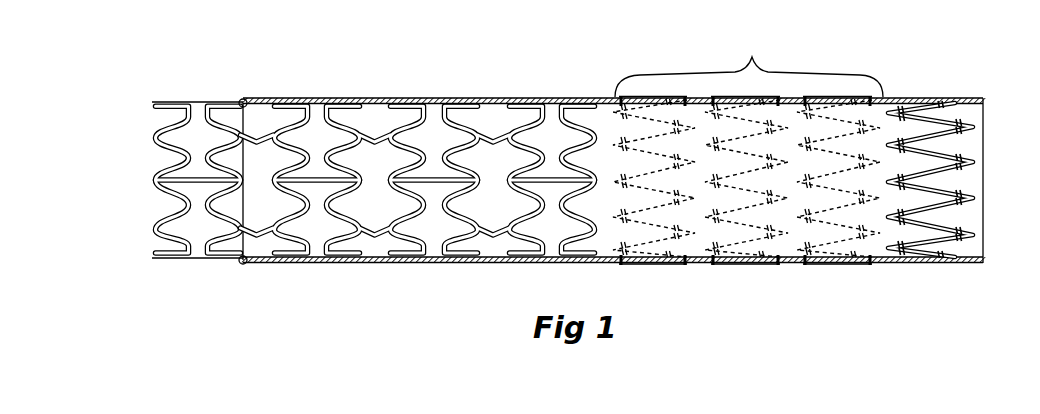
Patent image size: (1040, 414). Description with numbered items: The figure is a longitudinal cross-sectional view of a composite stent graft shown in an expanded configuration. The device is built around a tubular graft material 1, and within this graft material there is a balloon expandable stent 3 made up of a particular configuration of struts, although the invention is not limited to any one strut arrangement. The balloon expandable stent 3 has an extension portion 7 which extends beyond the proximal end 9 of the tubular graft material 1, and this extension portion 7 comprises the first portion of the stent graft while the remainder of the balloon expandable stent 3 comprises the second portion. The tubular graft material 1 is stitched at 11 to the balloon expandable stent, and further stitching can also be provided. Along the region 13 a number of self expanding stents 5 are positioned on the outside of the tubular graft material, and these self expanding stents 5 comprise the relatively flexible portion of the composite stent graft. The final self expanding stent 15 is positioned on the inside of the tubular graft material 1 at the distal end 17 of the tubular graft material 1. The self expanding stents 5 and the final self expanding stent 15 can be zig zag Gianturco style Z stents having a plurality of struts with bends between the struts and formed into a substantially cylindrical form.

The tubular graft material 1 is at (586, 97).
The balloon expandable stent 3 is at (347, 237).
The self expanding stents 5 is at (747, 228).
The extension portion 7 is at (160, 167).
The proximal end 9 is at (248, 264).
The stitching 11 is at (245, 99).
The region 13 is at (752, 60).
The final self expanding stent 15 is at (907, 243).
The distal end 17 is at (980, 263).